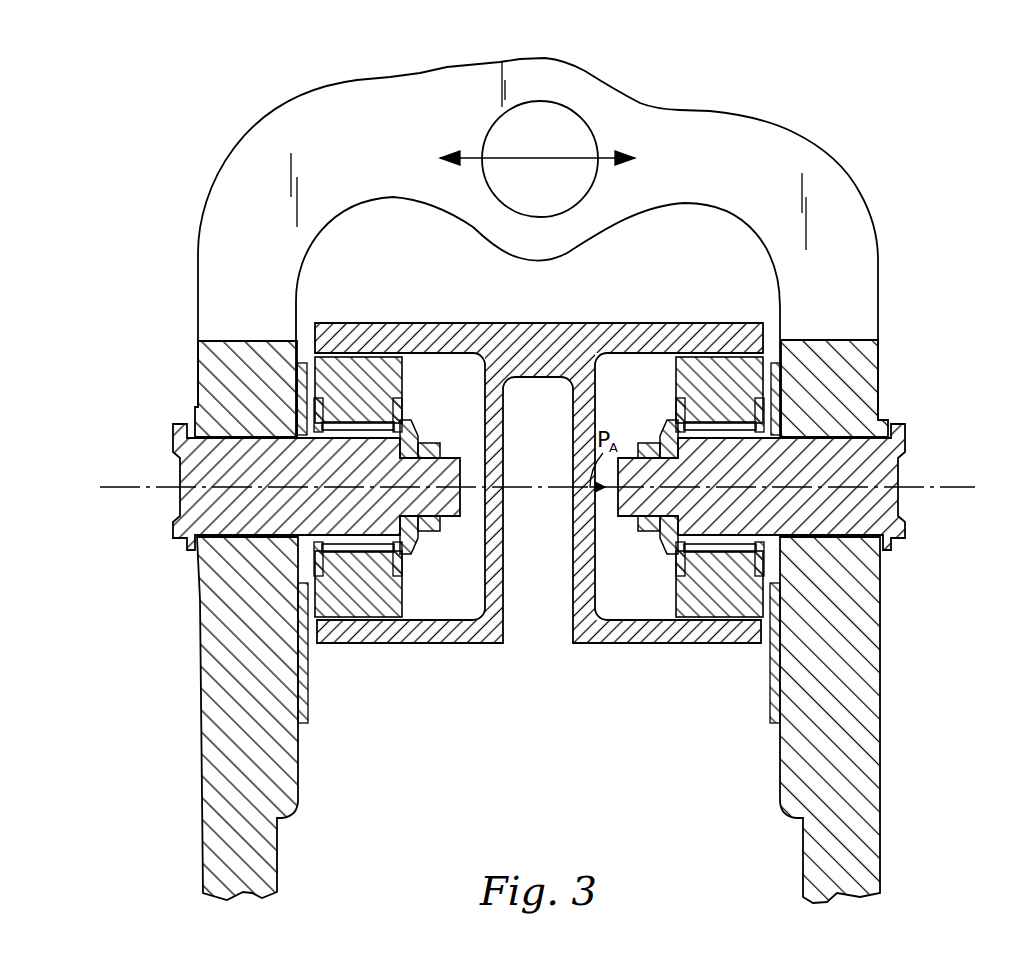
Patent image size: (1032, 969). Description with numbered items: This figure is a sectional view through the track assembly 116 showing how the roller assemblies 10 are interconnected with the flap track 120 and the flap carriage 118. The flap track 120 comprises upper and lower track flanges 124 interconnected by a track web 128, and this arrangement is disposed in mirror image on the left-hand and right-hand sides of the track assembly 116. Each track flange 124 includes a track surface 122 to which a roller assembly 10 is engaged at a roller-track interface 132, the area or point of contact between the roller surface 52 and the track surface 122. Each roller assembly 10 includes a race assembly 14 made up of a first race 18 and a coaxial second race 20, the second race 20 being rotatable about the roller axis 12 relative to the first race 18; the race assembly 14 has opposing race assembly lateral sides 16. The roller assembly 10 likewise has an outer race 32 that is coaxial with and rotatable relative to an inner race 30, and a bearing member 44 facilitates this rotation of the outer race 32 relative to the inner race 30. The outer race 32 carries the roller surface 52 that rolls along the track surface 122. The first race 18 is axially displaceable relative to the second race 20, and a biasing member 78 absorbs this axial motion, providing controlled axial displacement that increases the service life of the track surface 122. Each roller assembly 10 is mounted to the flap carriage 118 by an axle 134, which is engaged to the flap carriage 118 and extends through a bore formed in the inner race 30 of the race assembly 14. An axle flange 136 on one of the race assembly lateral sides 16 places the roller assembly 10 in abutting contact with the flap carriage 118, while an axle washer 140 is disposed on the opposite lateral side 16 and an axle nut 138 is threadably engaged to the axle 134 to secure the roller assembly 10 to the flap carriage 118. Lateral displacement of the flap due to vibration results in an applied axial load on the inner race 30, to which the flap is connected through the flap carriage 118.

The roller assembly 10 is at (537, 373).
The race assembly 14 is at (313, 340).
The roller axis 12 is at (537, 487).
The race assembly lateral sides 16 is at (538, 490).
The first race 18 is at (537, 646).
The second race 20 is at (537, 529).
The inner race 30 is at (538, 720).
The outer race 32 is at (537, 529).
The bearing member 44 is at (380, 337).
The roller surface 52 is at (539, 654).
The biasing member 78 is at (678, 400).
The track assembly 116 is at (553, 245).
The flap carriage 118 is at (833, 155).
The flap track 120 is at (540, 460).
The track surface 122 is at (443, 335).
The track flanges 124 is at (537, 490).
The track web 128 is at (505, 565).
The roller-track interface 132 is at (347, 645).
The axle 134 is at (190, 520).
The axle flange 136 is at (300, 388).
The axle nut 138 is at (428, 447).
The axle washer 140 is at (413, 425).